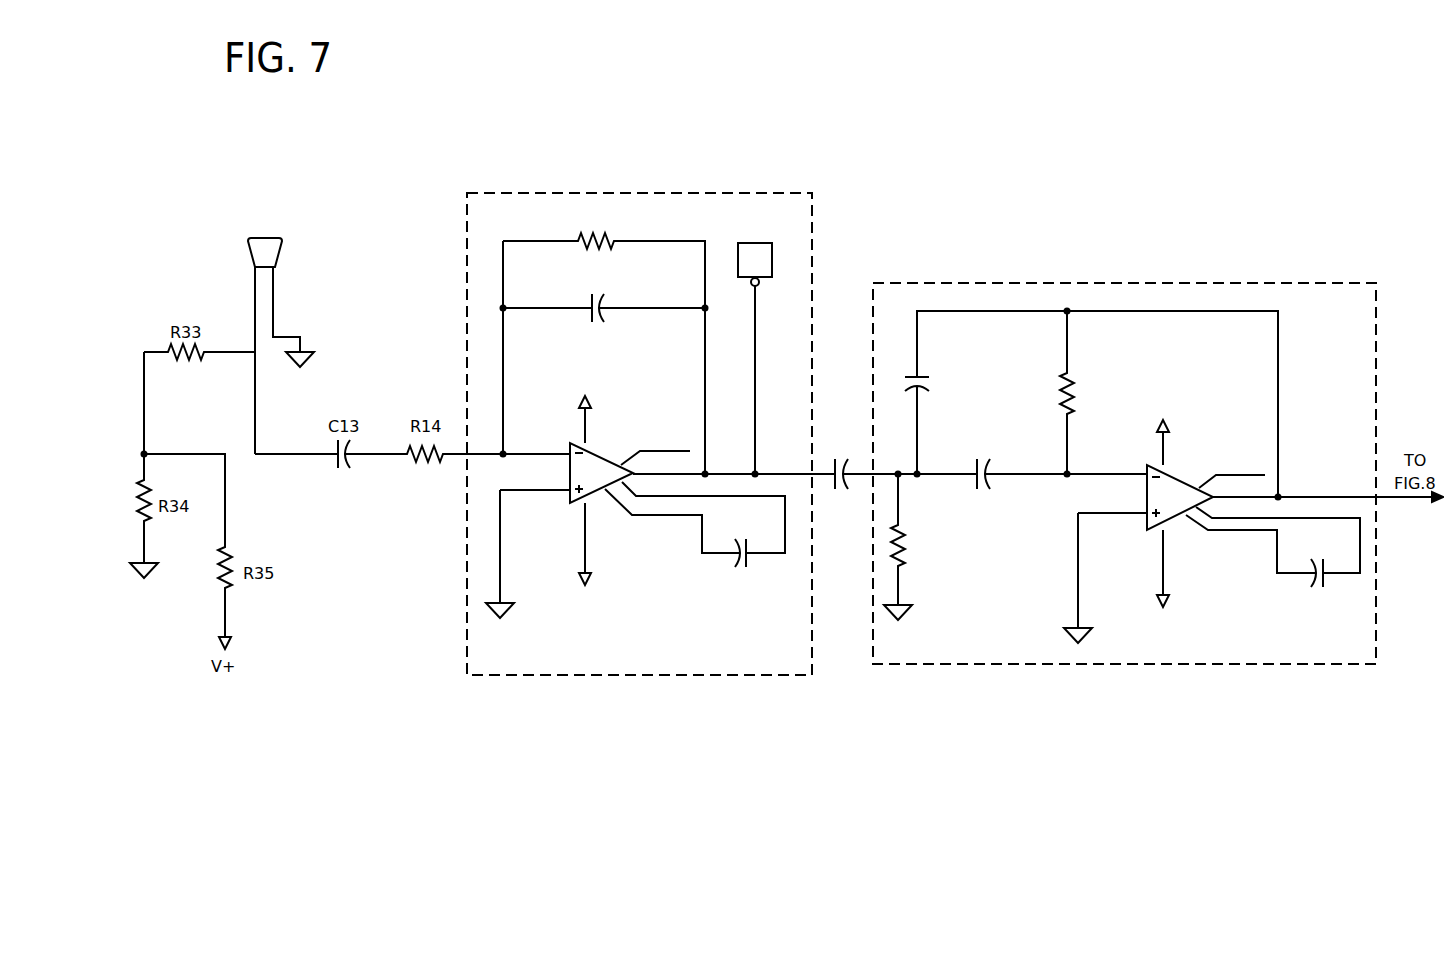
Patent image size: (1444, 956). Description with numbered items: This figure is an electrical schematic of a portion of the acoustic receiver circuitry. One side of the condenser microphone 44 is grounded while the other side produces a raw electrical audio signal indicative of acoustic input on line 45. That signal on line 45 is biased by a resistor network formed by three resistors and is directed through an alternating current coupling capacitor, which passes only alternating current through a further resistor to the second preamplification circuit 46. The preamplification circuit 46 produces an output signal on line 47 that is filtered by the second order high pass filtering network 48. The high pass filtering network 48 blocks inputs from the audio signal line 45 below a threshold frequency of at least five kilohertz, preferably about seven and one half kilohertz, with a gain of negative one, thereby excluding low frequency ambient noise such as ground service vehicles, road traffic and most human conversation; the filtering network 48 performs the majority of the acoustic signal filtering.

The condenser microphone 44 is at (283, 245).
The line 45 is at (254, 280).
The second preamplification circuit 46 is at (813, 219).
The line 47 is at (823, 478).
The second order high pass filtering network 48 is at (1099, 283).